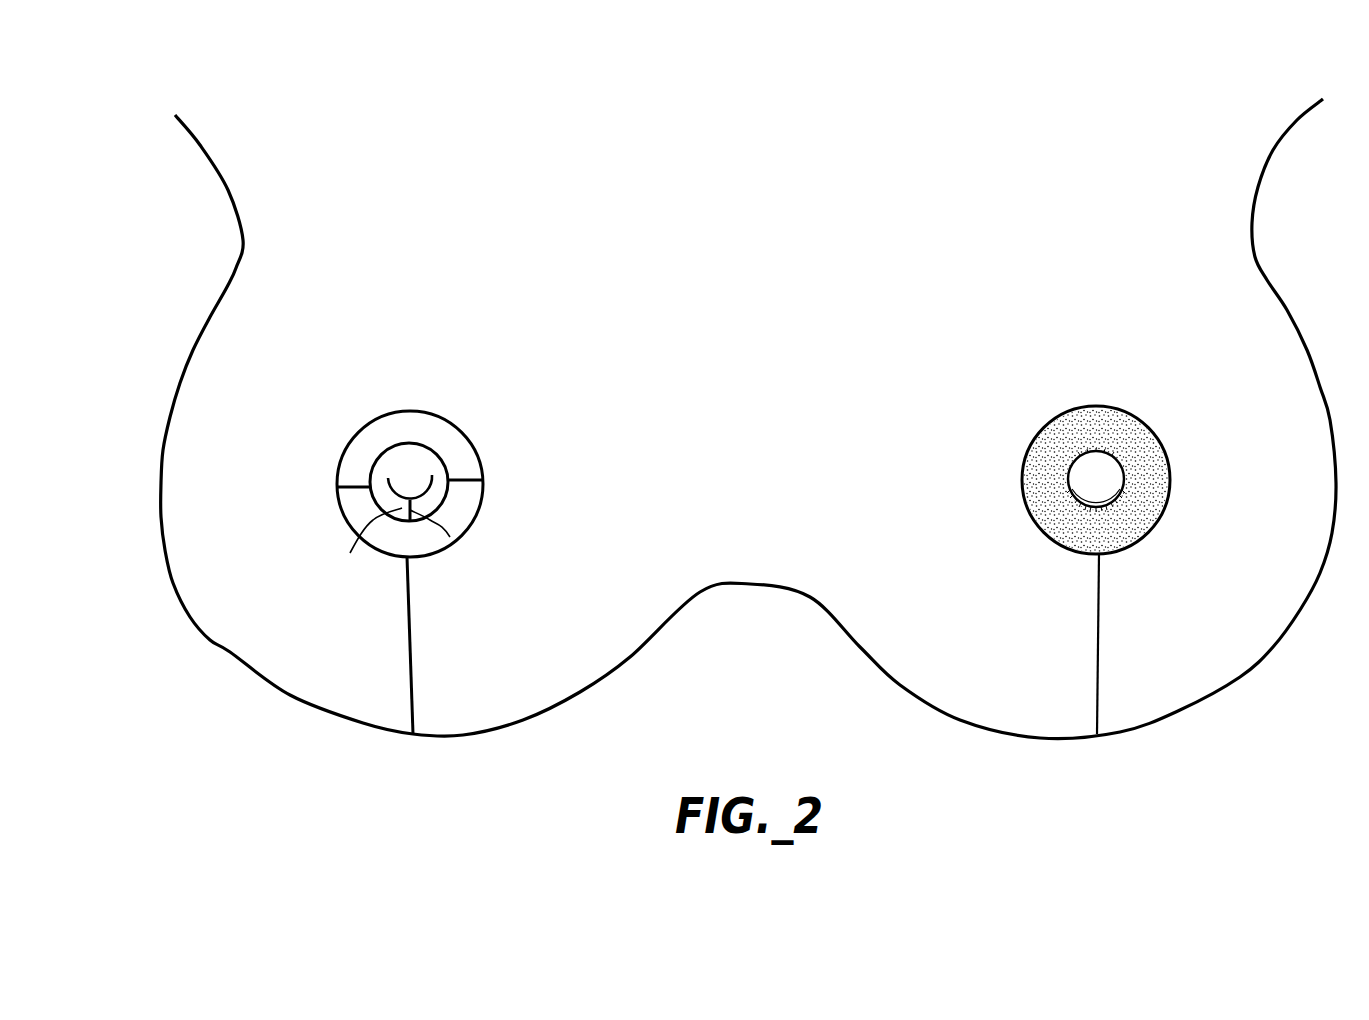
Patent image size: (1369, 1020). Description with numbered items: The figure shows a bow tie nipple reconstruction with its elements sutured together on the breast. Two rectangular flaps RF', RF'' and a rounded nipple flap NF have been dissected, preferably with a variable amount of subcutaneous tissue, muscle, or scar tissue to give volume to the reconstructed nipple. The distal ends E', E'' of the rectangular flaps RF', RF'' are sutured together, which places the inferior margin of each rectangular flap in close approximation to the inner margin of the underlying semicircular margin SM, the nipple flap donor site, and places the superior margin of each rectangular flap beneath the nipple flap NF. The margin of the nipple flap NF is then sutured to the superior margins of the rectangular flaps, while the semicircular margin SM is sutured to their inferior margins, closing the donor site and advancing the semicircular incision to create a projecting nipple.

The rectangular flap RF' is at (320, 450).
The rectangular flap RF'' is at (502, 446).
The nipple flap NF is at (410, 485).
The distal end of rectangular flap E' is at (304, 640).
The distal end of rectangular flap E'' is at (500, 641).
The semicircular margin SM is at (406, 518).